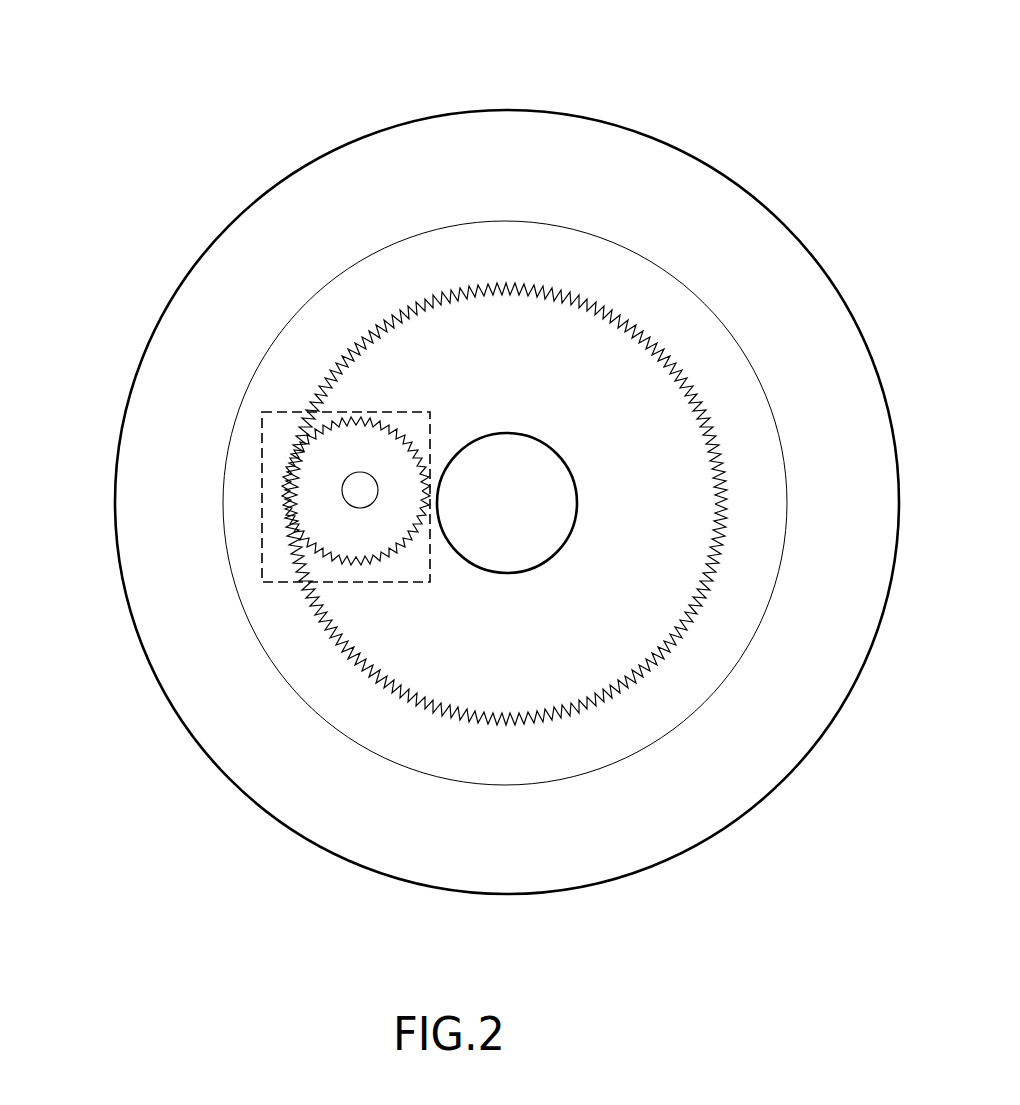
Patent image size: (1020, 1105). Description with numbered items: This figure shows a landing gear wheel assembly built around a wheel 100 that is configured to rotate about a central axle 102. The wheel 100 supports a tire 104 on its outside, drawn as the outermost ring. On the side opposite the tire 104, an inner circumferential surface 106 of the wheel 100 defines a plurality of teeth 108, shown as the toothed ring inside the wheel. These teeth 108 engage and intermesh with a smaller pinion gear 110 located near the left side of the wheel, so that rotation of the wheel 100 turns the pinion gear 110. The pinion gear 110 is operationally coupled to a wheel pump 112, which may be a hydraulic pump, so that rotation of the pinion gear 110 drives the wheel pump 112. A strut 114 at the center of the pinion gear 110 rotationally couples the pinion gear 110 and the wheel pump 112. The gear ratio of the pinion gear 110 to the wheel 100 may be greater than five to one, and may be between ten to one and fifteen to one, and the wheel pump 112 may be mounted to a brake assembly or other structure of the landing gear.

The wheel 100 is at (170, 166).
The axle 102 is at (520, 458).
The tire 104 is at (465, 135).
The inner circumferential surface 106 is at (682, 580).
The teeth 108 is at (299, 646).
The pinion gear 110 is at (327, 457).
The wheel pump 112 is at (262, 467).
The strut 114 is at (343, 488).